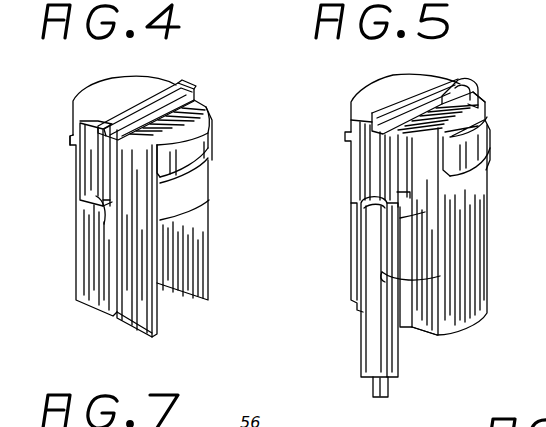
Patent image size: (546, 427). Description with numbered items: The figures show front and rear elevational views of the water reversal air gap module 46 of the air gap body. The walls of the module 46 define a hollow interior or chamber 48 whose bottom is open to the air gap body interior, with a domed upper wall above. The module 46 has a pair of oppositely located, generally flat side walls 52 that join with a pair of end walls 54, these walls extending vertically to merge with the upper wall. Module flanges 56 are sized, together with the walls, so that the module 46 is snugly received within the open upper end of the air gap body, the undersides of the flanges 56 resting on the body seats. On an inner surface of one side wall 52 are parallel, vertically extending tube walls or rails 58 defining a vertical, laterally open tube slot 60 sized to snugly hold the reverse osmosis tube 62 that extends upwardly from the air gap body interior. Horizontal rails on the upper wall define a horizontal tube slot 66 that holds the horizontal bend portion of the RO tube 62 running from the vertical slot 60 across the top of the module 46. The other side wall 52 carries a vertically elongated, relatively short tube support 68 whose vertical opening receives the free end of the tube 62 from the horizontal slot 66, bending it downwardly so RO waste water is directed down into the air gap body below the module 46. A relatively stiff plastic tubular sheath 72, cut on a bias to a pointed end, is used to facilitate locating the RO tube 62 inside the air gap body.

In FIG. 4, the air gap module 46 is at (73, 96).
In FIG. 5, the air gap module 46 is at (468, 83).
In FIG. 4, the chamber 48 is at (200, 222).
In FIG. 4, the side walls 52 is at (138, 312).
In FIG. 5, the side walls 52 is at (487, 138).
In FIG. 4, the end walls 54 is at (196, 185).
In FIG. 5, the end walls 54 is at (450, 318).
In FIG. 4, the module flanges 56 is at (70, 140).
In FIG. 5, the module flanges 56 is at (491, 156).
In FIG. 5, the tube walls or rails 58 is at (400, 218).
In FIG. 5, the vertical tube slot 60 is at (424, 275).
In FIG. 4, the reverse osmosis (RO) tube 62 is at (150, 104).
In FIG. 5, the reverse osmosis (RO) tube 62 is at (446, 84).
In FIG. 4, the horizontal tube slot 66 is at (180, 87).
In FIG. 5, the horizontal tube slot 66 is at (424, 106).
In FIG. 4, the tube support 68 is at (127, 212).
In FIG. 5, the tubular sheath 72 is at (385, 357).